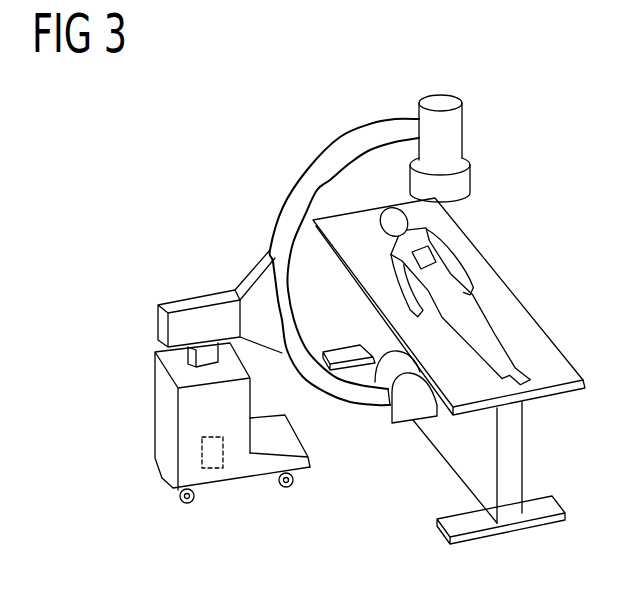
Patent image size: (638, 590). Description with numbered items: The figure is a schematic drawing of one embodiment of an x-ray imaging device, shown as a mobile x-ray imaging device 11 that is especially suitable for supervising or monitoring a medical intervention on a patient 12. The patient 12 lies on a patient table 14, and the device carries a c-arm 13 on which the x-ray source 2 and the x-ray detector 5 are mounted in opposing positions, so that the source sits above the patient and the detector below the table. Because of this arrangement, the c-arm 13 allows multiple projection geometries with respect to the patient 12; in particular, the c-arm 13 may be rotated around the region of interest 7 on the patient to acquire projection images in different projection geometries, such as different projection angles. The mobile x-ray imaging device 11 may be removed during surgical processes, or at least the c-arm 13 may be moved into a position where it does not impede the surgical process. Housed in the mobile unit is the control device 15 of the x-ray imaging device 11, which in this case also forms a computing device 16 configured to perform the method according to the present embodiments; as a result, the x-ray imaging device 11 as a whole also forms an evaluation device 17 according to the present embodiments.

The evaluation device 17 is at (230, 148).
The c-arm 13 is at (332, 160).
The x-ray source 2 is at (462, 182).
The patient table 14 is at (545, 365).
The patient 12 is at (478, 323).
The region of interest 7 is at (432, 244).
The x-ray detector 5 is at (405, 408).
The mobile x-ray imaging device 11 is at (155, 430).
The control device 15 is at (208, 467).
The computing device 16 is at (212, 432).